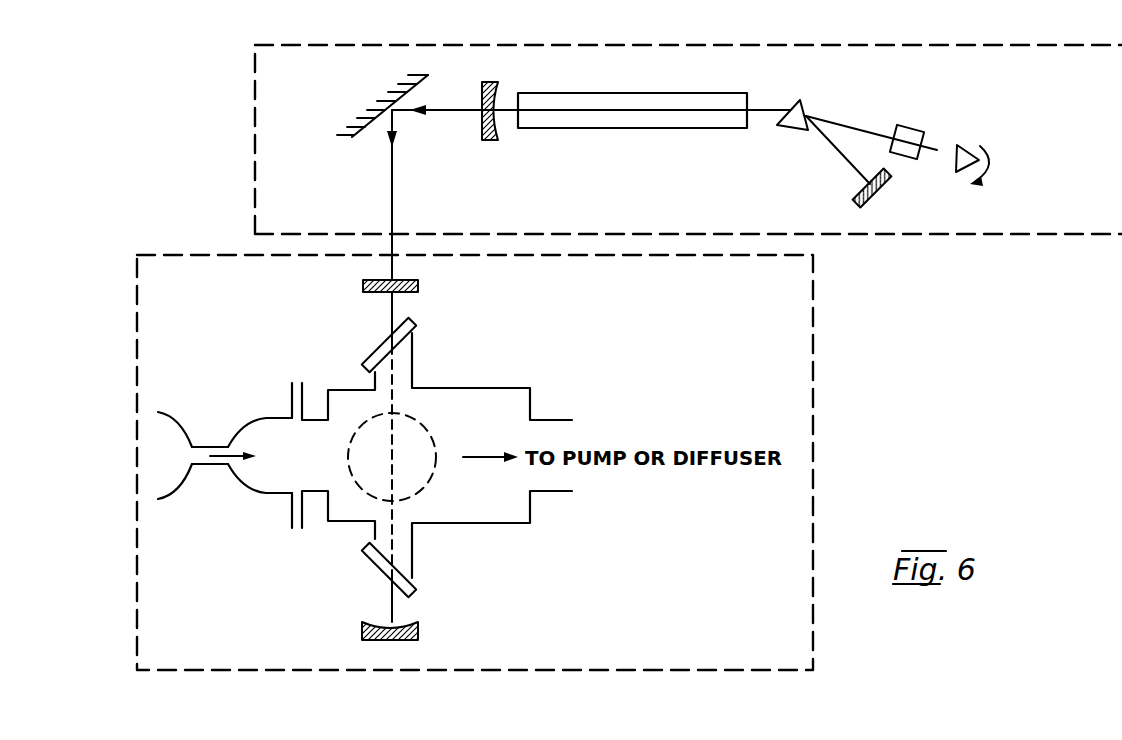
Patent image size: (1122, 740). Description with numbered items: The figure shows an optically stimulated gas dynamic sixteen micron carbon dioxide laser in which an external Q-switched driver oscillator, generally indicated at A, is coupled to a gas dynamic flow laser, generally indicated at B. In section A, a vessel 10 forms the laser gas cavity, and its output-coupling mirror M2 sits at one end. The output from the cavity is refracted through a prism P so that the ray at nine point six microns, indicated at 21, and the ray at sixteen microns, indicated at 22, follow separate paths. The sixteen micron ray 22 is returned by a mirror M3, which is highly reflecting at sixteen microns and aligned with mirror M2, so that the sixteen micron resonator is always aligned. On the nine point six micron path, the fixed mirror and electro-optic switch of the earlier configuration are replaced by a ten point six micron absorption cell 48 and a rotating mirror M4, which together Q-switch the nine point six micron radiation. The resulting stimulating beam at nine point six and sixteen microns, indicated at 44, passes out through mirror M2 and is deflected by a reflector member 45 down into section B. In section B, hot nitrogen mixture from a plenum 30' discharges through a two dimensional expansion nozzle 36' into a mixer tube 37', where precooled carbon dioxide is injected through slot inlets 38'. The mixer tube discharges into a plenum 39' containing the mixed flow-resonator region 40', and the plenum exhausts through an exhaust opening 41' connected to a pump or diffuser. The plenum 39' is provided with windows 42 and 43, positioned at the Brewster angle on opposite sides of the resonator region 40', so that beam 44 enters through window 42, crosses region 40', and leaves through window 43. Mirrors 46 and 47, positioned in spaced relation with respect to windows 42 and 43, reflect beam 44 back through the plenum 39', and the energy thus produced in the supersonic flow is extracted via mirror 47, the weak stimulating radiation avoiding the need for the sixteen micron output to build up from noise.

The vessel 10 is at (570, 128).
The ray at 9.6 microns 21 is at (840, 124).
The ray at 16 microns 22 is at (828, 148).
The 10.6 micron absorption cell 48 is at (908, 125).
The stimulating beam 44 is at (437, 111).
The mirror or reflector member 45 is at (372, 130).
The mirror 46 is at (373, 279).
The window 42 is at (412, 318).
The window 43 is at (418, 592).
The mirror 47 is at (420, 632).
The plenum 30' is at (225, 439).
The two dimensional expansion nozzle 36' is at (217, 426).
The mixer tube 37' is at (218, 498).
The inlets 38' is at (333, 457).
The plenum 39' is at (492, 376).
The resonator region 40' is at (417, 457).
The exhaust opening 41' is at (526, 529).
The prism P is at (790, 131).
The output-coupling reflector or mirror M2 is at (491, 141).
The reflector or mirror M3 is at (855, 190).
The rotating reflector or mirror M4 is at (955, 162).
The static 16 micron laser A is at (962, 242).
The gas dynamic flow laser B is at (820, 386).